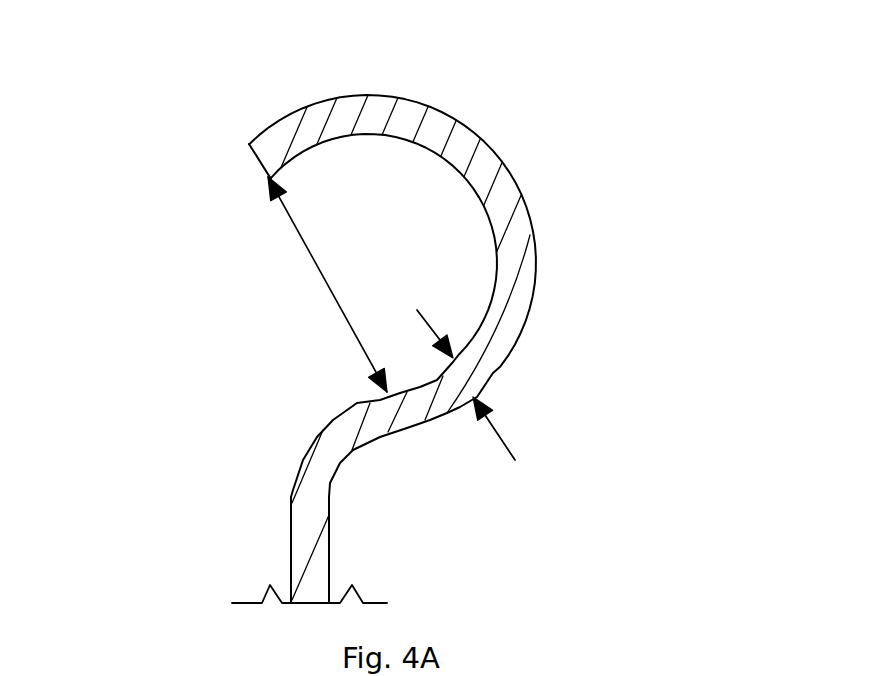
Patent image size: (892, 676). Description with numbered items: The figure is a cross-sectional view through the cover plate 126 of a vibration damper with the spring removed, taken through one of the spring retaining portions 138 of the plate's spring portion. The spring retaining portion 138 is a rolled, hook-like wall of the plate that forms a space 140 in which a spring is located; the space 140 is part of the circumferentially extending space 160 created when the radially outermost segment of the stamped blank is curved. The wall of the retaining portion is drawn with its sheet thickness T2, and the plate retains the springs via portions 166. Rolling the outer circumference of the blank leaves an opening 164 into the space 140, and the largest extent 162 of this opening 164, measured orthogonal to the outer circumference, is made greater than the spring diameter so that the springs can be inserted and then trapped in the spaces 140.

The cover plate 126 is at (492, 121).
The spring retaining portions 138 is at (538, 307).
The largest extent 162 is at (323, 277).
The portions 166 is at (313, 104).
The spaces 140 is at (330, 217).
The openings 164 is at (242, 277).
The circumferentially extending space 160 is at (332, 343).
The thickness T2 is at (495, 443).